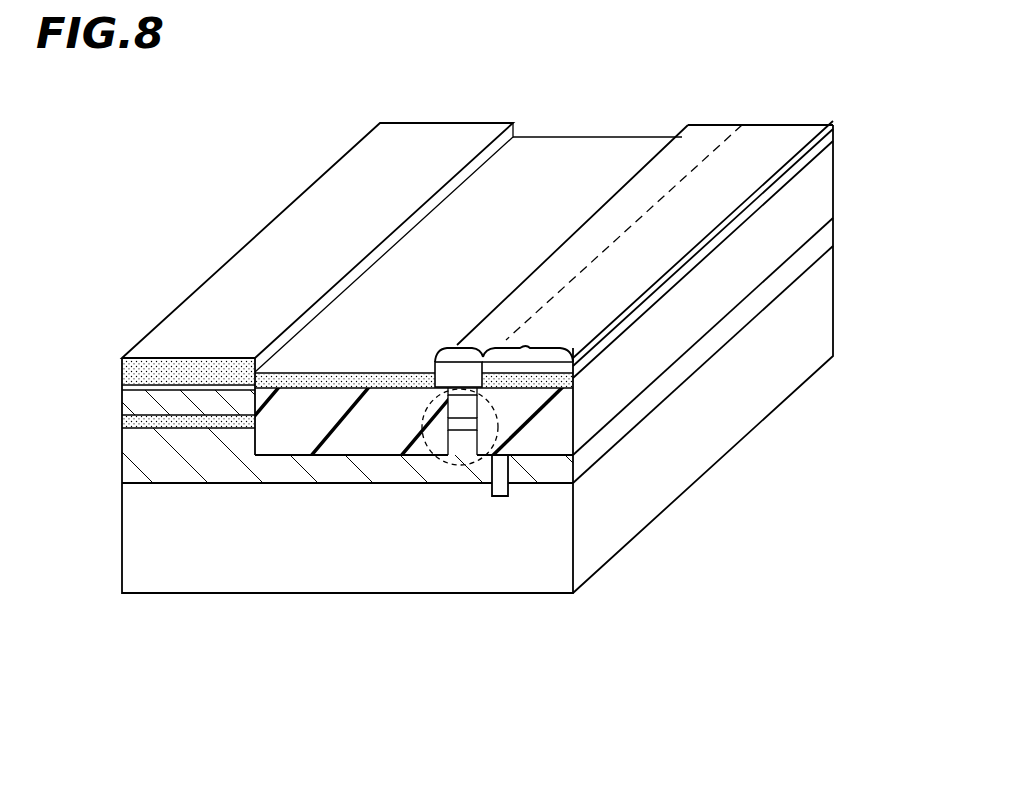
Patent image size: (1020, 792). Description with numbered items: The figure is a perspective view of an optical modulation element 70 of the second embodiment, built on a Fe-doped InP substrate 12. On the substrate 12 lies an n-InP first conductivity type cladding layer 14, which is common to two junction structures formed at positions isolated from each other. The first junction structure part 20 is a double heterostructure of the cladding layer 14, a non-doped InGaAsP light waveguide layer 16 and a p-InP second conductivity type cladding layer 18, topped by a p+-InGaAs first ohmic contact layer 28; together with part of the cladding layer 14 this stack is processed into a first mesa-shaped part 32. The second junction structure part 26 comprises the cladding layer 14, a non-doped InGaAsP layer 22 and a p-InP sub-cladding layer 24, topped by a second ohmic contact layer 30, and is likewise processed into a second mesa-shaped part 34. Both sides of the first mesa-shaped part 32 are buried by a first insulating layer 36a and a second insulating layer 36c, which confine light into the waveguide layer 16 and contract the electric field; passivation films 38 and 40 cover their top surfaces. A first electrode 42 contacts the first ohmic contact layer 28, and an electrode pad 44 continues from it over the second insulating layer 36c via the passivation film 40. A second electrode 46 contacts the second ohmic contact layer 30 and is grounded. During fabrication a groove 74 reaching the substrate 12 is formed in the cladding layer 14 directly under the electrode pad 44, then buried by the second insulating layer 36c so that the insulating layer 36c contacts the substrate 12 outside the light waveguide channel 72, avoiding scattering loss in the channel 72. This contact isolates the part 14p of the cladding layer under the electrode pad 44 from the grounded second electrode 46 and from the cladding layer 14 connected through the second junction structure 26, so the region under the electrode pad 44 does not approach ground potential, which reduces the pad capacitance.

The substrate 12 is at (653, 500).
The first conductivity type cladding layer 14 is at (177, 447).
The part of the n-InP cladding layer directly under the electrode pad 14p is at (575, 467).
The light waveguide layer 16 is at (462, 429).
The second conductivity type cladding layer 18 is at (468, 405).
The first junction structure part 20 is at (533, 640).
The non-doped layer 22 is at (184, 424).
The second conductivity type sub-cladding layer 24 is at (188, 403).
The second junction structure part 26 is at (255, 643).
The first ohmic contact layer 28 is at (442, 397).
The second ohmic contact layer 30 is at (172, 390).
The first mesa-shaped part 32 is at (527, 688).
The second mesa-shaped part 34 is at (248, 690).
The first insulating layer 36a is at (288, 440).
The second insulating layer 36c is at (575, 440).
The passivation film 38 is at (562, 155).
The passivation film 40 is at (575, 381).
The first electrode 42 is at (455, 343).
The electrode pad 44 is at (520, 343).
The second electrode 46 is at (252, 263).
The optical modulation element 70 is at (814, 92).
The light waveguide channel 72 is at (510, 462).
The groove 74 is at (498, 481).